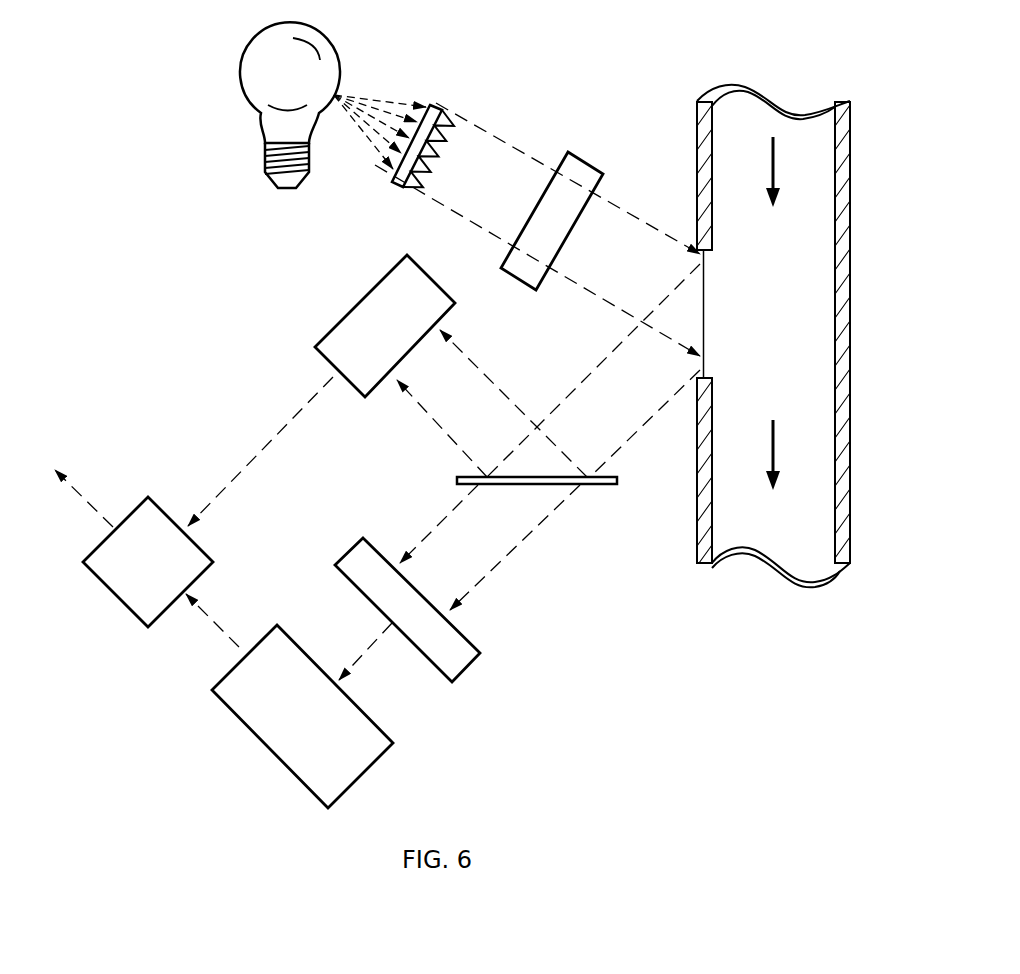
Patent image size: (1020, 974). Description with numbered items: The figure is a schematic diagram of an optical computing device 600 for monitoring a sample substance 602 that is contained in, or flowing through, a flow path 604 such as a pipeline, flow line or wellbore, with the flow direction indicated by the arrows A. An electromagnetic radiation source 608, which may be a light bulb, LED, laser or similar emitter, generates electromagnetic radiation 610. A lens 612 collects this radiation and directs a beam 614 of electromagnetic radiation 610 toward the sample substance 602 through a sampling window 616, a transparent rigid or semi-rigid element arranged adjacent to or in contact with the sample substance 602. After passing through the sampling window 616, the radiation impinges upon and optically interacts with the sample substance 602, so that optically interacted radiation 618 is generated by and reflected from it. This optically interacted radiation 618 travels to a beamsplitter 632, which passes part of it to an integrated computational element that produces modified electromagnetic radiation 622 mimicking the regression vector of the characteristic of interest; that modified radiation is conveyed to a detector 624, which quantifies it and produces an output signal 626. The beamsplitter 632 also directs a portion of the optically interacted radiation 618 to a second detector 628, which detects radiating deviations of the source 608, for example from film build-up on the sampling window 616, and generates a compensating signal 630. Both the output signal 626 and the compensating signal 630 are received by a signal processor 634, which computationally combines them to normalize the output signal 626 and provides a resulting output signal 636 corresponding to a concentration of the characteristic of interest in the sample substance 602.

The optical computing device 600 is at (221, 279).
The sample substance 602 is at (797, 342).
The flow path 604 is at (850, 140).
The electromagnetic radiation source 608 is at (240, 72).
The electromagnetic radiation 610 is at (387, 102).
The lens 612 is at (440, 110).
The beam of electromagnetic radiation 614 is at (510, 145).
The sampling window 616 is at (705, 278).
The optically interacted radiation 618 is at (515, 548).
The modified electromagnetic radiation 622 is at (373, 641).
The detector 624 is at (277, 760).
The output signal 626 is at (213, 628).
The second detector 628 is at (358, 302).
The compensating signal 630 is at (257, 452).
The beamsplitter 632 is at (598, 487).
The signal processor 634 is at (117, 595).
The resulting output signal 636 is at (90, 503).